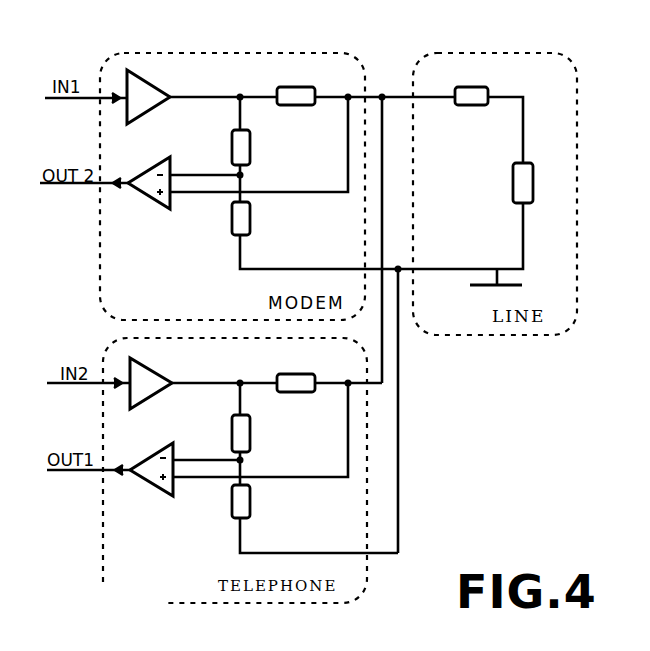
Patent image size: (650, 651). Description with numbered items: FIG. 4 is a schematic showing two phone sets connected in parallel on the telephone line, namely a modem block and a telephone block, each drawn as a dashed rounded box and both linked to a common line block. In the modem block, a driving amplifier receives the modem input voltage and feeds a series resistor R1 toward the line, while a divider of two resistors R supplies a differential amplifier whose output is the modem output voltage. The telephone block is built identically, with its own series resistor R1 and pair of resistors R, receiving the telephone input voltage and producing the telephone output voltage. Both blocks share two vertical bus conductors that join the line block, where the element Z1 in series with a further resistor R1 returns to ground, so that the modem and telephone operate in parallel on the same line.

The resistor R1 is at (418, 229).
The resistor R is at (248, 324).
The impedance Z1 is at (471, 85).